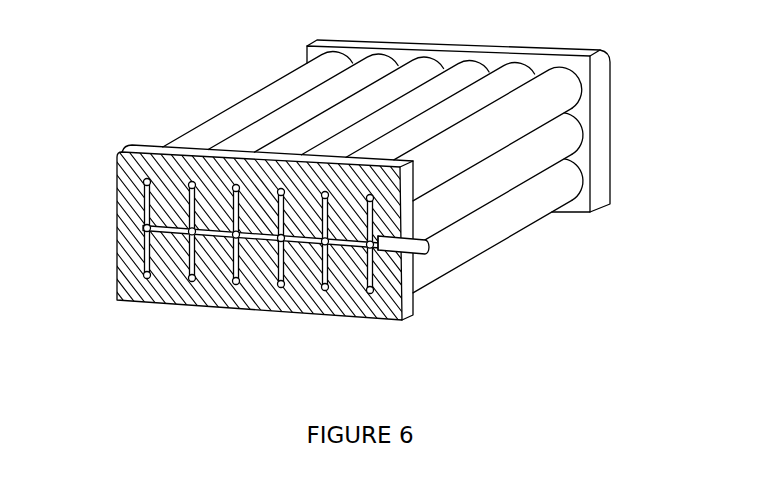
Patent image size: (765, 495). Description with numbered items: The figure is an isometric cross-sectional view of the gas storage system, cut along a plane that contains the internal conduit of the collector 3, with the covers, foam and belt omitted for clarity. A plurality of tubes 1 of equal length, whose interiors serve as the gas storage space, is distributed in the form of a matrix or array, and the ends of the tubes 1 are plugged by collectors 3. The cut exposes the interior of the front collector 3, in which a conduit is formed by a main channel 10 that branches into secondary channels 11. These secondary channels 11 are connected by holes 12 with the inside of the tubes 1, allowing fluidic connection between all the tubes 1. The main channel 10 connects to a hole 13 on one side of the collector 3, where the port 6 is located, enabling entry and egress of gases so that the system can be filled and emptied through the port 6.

The tube 1 is at (248, 110).
The collector 3 is at (603, 150).
The port 6 is at (416, 256).
The main channel 10 is at (273, 223).
The secondary channel 11 is at (148, 203).
The hole 12 is at (133, 171).
The hole 13 is at (362, 250).